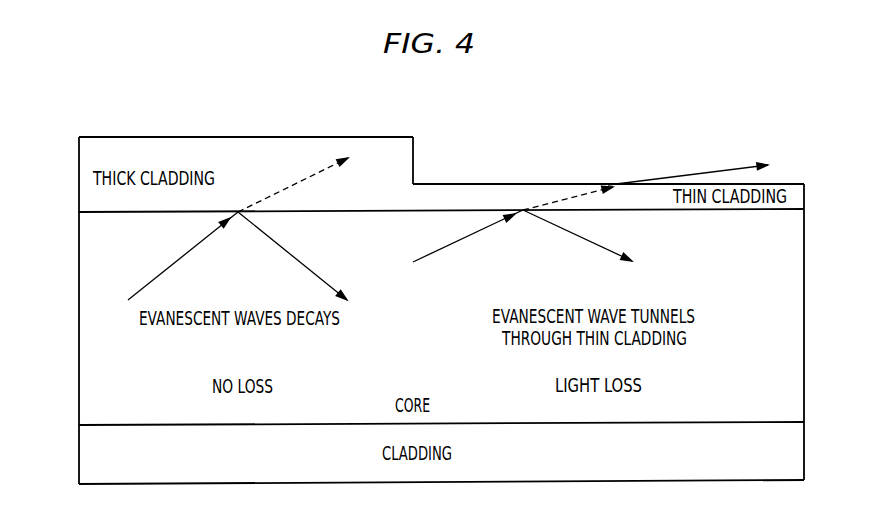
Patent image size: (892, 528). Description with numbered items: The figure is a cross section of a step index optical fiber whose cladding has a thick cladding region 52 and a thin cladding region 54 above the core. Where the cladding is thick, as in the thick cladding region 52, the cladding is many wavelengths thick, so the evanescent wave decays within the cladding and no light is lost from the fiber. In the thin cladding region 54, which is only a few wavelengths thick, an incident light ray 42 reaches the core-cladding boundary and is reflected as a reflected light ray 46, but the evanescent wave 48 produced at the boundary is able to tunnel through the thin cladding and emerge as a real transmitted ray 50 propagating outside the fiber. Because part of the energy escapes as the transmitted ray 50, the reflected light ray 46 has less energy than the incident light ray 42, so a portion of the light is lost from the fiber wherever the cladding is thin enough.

The incident light ray 42 is at (450, 243).
The reflected light ray 46 is at (594, 245).
The evanescent wave 48 is at (576, 193).
The transmitted ray 50 is at (706, 170).
The thick cladding region 52 is at (322, 137).
The thin cladding region 54 is at (468, 184).